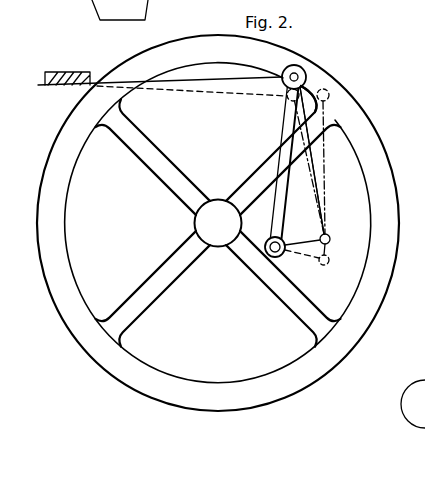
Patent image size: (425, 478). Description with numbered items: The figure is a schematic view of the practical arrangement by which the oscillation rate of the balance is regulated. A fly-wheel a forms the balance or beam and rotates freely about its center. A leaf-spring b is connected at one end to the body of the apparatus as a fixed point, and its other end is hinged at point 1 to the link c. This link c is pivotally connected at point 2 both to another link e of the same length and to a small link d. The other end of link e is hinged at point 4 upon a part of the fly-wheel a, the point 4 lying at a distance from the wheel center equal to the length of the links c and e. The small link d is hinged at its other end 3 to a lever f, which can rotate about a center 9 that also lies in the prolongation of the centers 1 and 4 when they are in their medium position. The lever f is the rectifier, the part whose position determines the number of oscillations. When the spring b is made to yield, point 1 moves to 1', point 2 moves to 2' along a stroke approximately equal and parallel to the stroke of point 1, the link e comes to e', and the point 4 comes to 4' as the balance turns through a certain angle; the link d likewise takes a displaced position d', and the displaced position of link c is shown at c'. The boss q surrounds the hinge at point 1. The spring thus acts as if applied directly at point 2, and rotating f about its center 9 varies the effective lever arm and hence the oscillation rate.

The fly-wheel a is at (345, 321).
The center of lever f 9 is at (215, 227).
The hinge point of spring b to link c 1 is at (309, 65).
The hinge point of link e on fly-wheel 4 is at (319, 64).
The boss web q is at (298, 73).
The displaced position of point 1 1' is at (276, 105).
The displaced position of point 4 4' is at (344, 87).
The leaf-spring b is at (172, 88).
The lever f is at (279, 207).
The hinge point of link d to lever f 3 is at (268, 254).
The pivot point of links c, e and d 2 is at (332, 235).
The displaced position of point 2 2' is at (337, 251).
The small link d is at (302, 233).
The connecting link in displaced position d' is at (309, 271).
The link c is at (341, 160).
The link e is at (350, 160).
The lever arm centre line displaced c' is at (354, 167).
The displaced position of link e e' is at (363, 167).